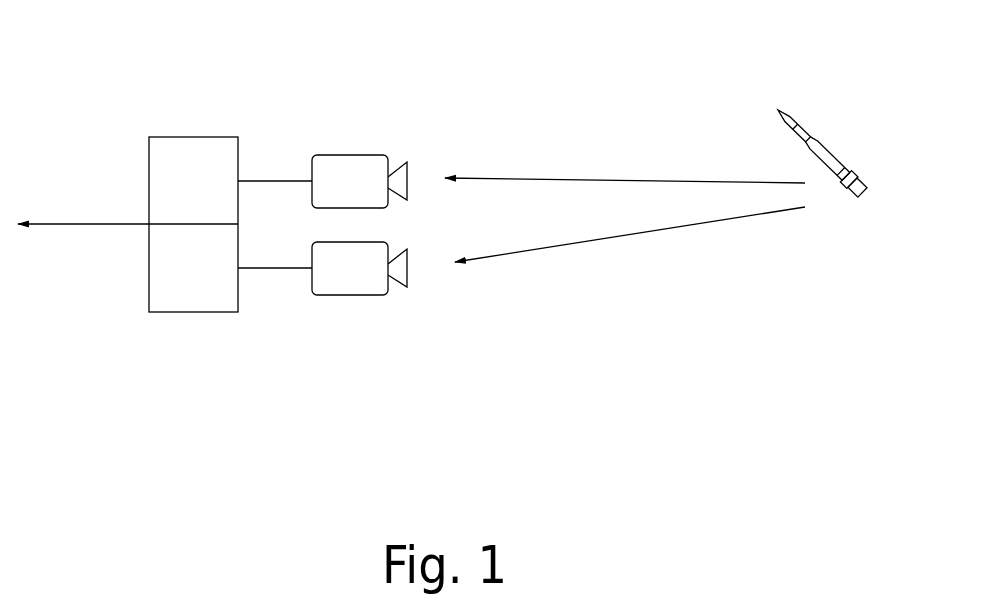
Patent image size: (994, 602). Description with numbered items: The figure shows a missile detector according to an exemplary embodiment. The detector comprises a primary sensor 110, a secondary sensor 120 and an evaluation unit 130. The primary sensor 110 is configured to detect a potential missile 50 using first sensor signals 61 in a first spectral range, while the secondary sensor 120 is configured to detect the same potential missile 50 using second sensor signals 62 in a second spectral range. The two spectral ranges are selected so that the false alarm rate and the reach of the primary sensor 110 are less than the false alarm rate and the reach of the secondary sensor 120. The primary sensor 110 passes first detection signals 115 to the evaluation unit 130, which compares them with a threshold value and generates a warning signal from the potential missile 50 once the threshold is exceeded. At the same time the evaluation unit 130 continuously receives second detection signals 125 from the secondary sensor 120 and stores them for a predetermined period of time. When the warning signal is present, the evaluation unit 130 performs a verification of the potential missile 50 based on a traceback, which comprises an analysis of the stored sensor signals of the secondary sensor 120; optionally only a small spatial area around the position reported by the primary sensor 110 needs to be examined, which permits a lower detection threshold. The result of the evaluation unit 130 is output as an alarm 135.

The potential missile 50 is at (833, 150).
The first sensor signals 61 is at (550, 177).
The second sensor signals 62 is at (593, 240).
The primary sensor 110 is at (342, 153).
The first detection signals 115 is at (247, 181).
The secondary sensor 120 is at (353, 295).
The second detection signals 125 is at (257, 268).
The evaluation unit 130 is at (163, 312).
The alarm 135 is at (57, 225).